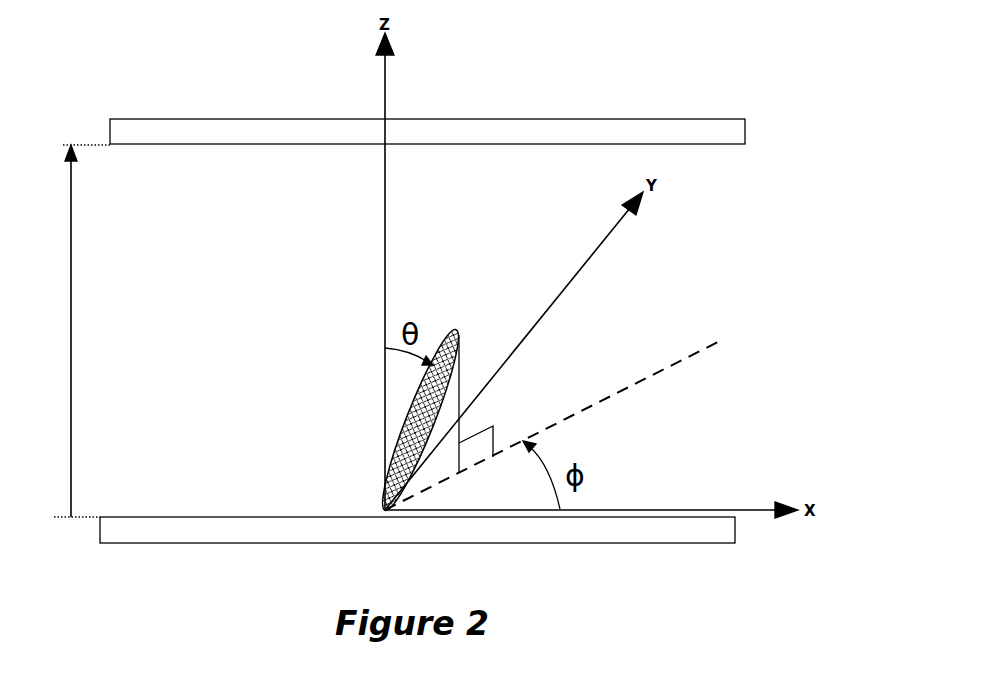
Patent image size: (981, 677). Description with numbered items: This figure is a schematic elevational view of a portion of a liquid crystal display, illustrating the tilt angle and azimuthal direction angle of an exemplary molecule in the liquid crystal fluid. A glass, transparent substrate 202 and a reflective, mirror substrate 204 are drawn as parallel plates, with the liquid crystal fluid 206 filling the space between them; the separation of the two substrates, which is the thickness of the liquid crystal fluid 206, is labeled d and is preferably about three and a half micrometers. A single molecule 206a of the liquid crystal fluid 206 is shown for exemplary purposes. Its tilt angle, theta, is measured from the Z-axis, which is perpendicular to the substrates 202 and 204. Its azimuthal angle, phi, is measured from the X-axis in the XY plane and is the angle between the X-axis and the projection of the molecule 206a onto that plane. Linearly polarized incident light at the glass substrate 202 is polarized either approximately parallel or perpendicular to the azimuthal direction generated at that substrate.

The glass substrate 202 is at (733, 131).
The reflective substrate 204 is at (726, 532).
The liquid crystal fluid 206 is at (143, 331).
The molecule 206a is at (451, 330).